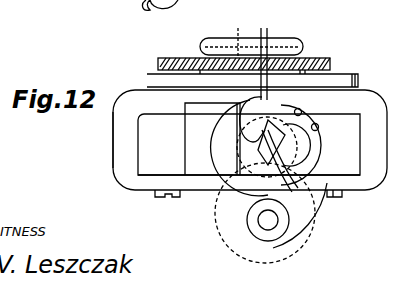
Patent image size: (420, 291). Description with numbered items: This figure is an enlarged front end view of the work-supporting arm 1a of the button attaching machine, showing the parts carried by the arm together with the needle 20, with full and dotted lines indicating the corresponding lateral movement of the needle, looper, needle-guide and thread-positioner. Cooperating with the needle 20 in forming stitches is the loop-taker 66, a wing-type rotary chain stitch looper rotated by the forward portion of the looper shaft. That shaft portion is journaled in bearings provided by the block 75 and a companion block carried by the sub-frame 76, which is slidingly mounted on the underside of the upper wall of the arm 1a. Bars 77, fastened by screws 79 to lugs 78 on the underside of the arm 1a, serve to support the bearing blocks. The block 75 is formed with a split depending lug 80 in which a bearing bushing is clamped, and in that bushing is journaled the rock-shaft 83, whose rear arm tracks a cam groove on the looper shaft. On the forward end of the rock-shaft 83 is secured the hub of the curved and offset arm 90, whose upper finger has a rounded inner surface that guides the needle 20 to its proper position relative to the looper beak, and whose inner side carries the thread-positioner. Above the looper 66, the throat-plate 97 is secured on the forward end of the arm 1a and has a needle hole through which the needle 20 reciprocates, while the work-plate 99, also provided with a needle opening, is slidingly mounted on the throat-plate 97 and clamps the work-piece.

The work-supporting arm 1a is at (113, 128).
The needle 20 is at (266, 30).
The loop-taker 66 is at (243, 207).
The block 75 is at (240, 126).
The sub-frame 76 is at (186, 120).
The bars 77 is at (195, 185).
The lugs 78 is at (150, 155).
The screws 79 is at (160, 197).
The split depending lug 80 is at (275, 245).
The rock-shaft 83 is at (270, 222).
The curved and offset arm 90 is at (327, 151).
The throat-plate 97 is at (358, 80).
The work-plate 99 is at (330, 68).